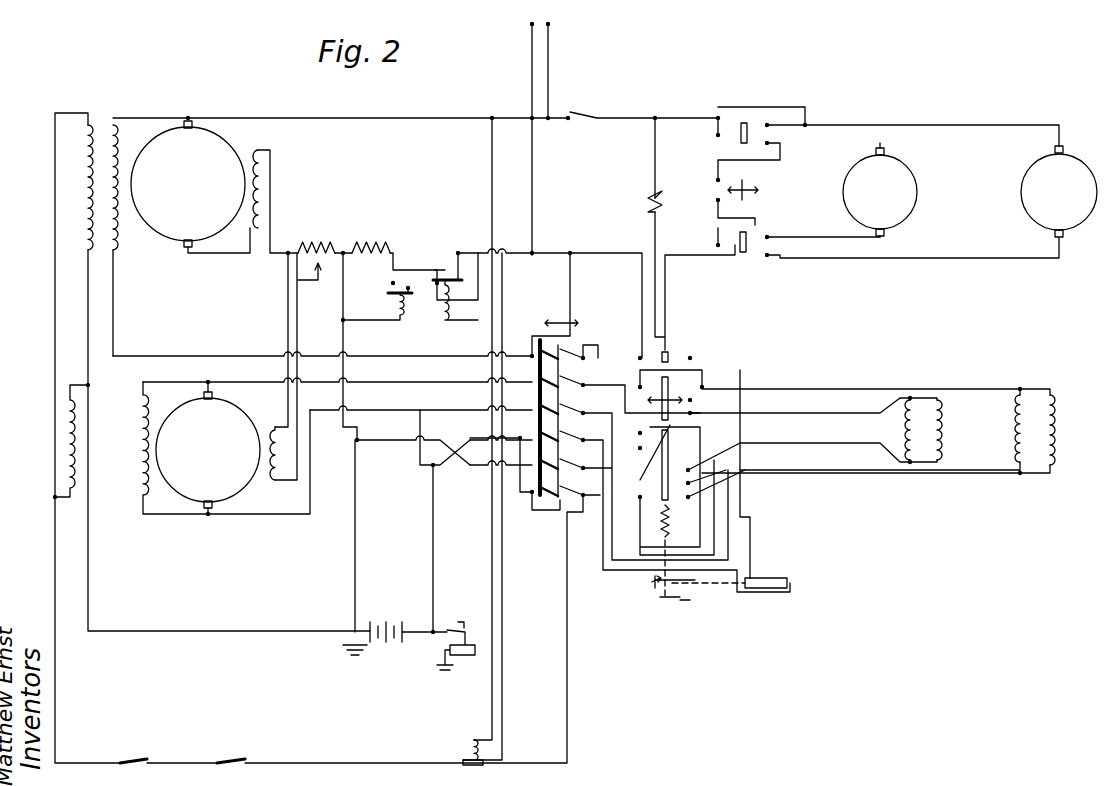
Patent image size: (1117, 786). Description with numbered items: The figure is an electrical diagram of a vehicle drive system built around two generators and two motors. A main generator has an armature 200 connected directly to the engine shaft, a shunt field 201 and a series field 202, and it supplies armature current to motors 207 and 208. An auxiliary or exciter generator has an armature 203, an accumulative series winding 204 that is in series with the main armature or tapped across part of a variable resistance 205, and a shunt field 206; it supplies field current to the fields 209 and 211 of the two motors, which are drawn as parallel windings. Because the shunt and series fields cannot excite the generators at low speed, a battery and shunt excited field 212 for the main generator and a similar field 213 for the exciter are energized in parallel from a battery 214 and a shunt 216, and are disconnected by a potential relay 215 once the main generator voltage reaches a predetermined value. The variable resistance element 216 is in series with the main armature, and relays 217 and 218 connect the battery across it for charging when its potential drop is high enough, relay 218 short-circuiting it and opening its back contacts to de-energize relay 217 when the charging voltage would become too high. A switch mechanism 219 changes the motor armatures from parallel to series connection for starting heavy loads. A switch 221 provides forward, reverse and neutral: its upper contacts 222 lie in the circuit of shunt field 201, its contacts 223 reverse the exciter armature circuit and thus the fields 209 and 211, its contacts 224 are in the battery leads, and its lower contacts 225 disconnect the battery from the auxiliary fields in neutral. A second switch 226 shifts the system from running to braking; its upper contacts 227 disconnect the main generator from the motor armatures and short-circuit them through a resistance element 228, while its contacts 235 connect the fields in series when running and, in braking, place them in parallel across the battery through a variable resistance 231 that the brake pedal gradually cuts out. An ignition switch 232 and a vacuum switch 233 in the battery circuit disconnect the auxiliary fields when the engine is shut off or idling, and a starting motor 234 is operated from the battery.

The main generator armature 200 is at (200, 140).
The shunt field 201 is at (113, 118).
The series field 202 is at (262, 150).
The exciter generator armature 203 is at (238, 428).
The accumulative series winding 204 is at (272, 482).
The variable resistance 205 is at (318, 250).
The shunt field 206 is at (145, 394).
The motor 207 is at (912, 194).
The motor 208 is at (1088, 216).
The motor field 209 is at (915, 406).
The motor field 211 is at (1035, 393).
The battery and shunt excited field 212 is at (88, 118).
The battery and shunt excited field 213 is at (66, 409).
The battery 214 is at (401, 646).
The potential relay 215 is at (470, 748).
The variable resistance element 216 is at (372, 250).
The relay 217 is at (395, 305).
The relay 218 is at (445, 318).
The switch mechanism 219 is at (747, 125).
The switch 221 is at (542, 435).
The upper contacts 222 is at (584, 355).
The second set of contacts 223 is at (538, 400).
The contacts 224 is at (538, 456).
The lower contacts 225 is at (530, 492).
The second switch 226 is at (652, 583).
The upper contacts 227 is at (690, 358).
The resistance element 228 is at (648, 213).
The variable resistance 231 is at (785, 590).
The ignition switch 232 is at (128, 758).
The vacuum switch 233 is at (228, 758).
The starting motor 234 is at (478, 655).
The contacts 235 is at (666, 442).